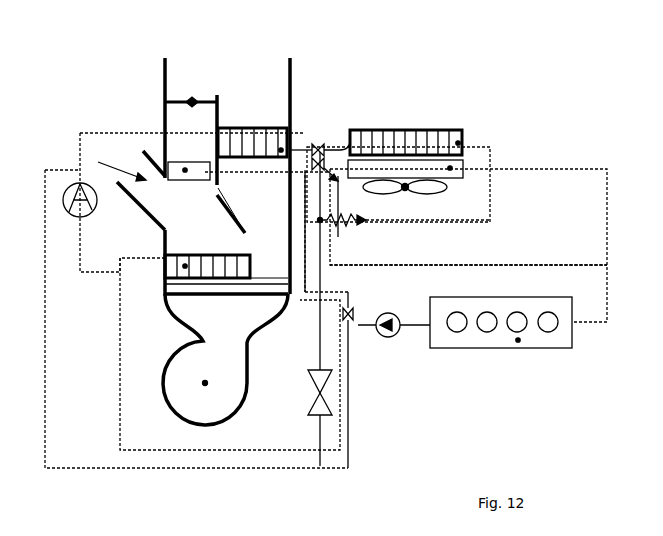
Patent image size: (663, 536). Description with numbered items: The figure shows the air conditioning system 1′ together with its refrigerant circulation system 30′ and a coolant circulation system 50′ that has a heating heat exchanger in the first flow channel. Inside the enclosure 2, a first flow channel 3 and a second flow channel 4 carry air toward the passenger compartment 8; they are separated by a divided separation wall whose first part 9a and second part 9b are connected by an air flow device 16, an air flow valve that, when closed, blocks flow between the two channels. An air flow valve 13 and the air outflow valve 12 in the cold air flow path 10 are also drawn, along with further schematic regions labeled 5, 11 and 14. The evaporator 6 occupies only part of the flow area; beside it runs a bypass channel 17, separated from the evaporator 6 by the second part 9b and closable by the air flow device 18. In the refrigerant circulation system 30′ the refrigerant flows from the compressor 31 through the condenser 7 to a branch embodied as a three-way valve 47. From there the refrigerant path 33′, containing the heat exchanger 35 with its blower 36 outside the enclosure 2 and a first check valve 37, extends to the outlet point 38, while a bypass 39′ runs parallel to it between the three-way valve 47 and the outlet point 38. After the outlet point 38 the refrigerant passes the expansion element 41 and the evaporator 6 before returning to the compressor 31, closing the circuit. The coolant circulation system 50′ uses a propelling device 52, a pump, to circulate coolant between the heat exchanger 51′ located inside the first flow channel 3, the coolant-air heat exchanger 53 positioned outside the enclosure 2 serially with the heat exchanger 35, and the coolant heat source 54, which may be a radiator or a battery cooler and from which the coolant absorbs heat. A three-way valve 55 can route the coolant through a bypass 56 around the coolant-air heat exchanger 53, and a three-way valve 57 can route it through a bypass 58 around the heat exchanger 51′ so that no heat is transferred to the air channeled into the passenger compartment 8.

The air conditioning system 1′ is at (556, 100).
The enclosure 2 is at (163, 62).
The first flow channel 3 is at (152, 123).
The second flow channel 4 is at (298, 75).
The muffler 5 is at (208, 385).
The evaporator 6 is at (178, 281).
The condenser 7 is at (294, 133).
The passenger compartment 8 is at (222, 63).
The first part of the separation wall 9a is at (222, 196).
The second part of the separation wall 9b is at (252, 292).
The cold air flow path 10 is at (135, 161).
The chamber 11 is at (194, 160).
The air outflow valve 12 is at (80, 160).
The air flow valve 13 is at (160, 118).
The heat exchanger 14 is at (279, 148).
The air flow device 16 is at (224, 222).
The bypass channel 17 is at (258, 266).
The air flow device 18 is at (280, 318).
The refrigerant circulation system 30′ is at (110, 382).
The compressor 31 is at (68, 208).
The refrigerant path 33′ is at (492, 148).
The heat exchanger 35 is at (459, 140).
The blower 36 is at (407, 190).
The first check valve 37 is at (364, 226).
The outlet point 38 is at (343, 231).
The bypass 39′ is at (312, 166).
The expansion element 41 is at (333, 404).
The three-way valve 47 is at (324, 146).
The coolant circulation system 50′ is at (594, 216).
The heat exchanger 51′ is at (185, 173).
The propelling device 52 is at (392, 336).
The coolant-air heat exchanger 53 is at (453, 170).
The coolant heat source 54 is at (520, 342).
The three-way valve 55 is at (335, 184).
The bypass 56 is at (425, 268).
The three-way valve 57 is at (352, 328).
The bypass 58 is at (352, 297).